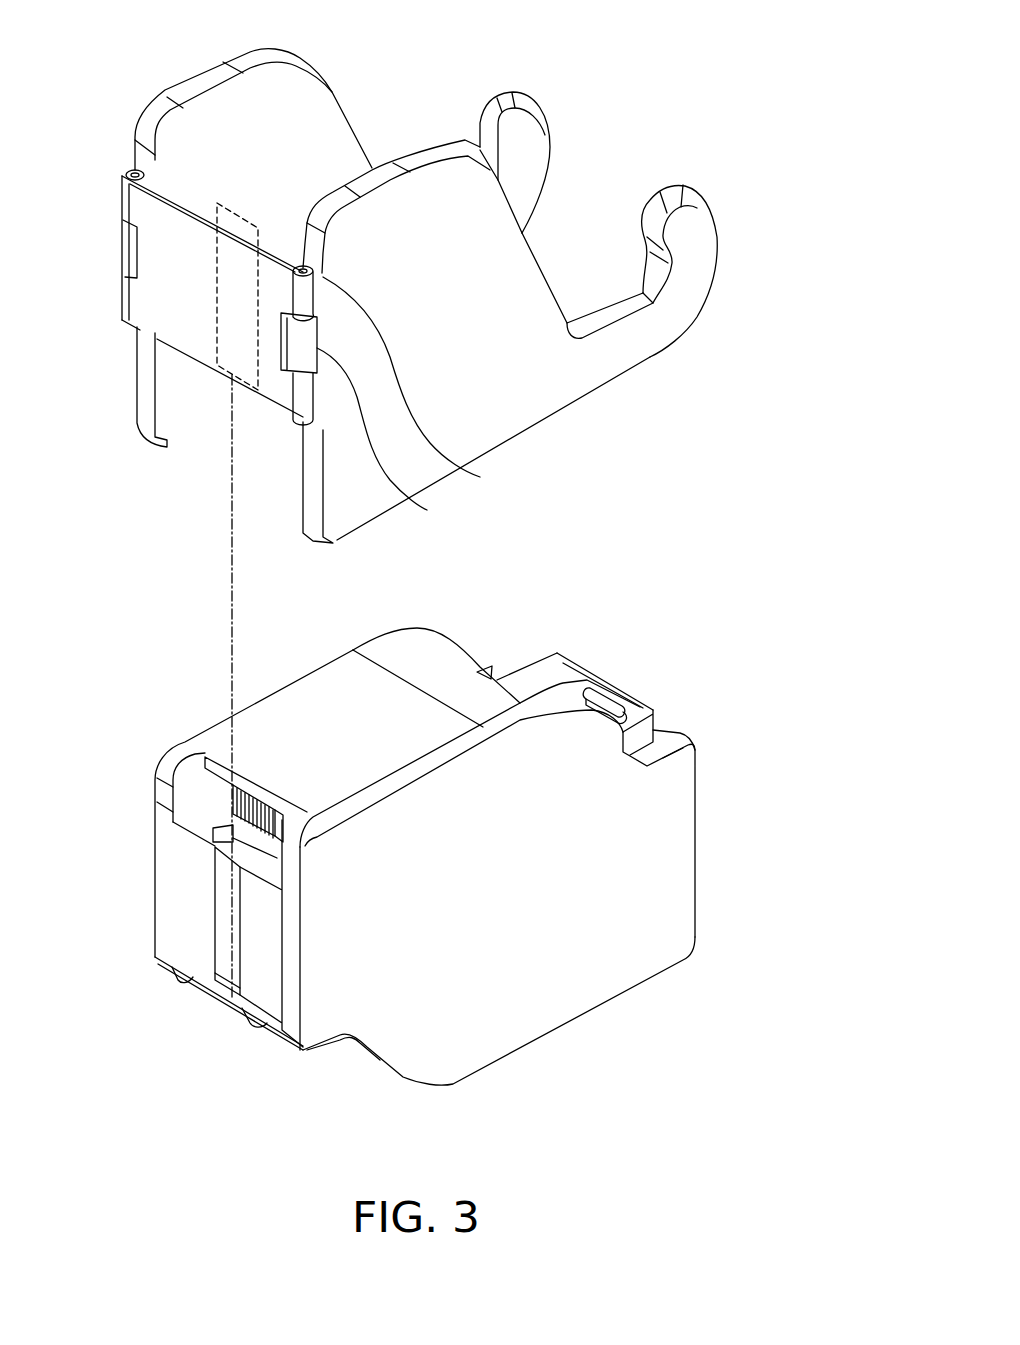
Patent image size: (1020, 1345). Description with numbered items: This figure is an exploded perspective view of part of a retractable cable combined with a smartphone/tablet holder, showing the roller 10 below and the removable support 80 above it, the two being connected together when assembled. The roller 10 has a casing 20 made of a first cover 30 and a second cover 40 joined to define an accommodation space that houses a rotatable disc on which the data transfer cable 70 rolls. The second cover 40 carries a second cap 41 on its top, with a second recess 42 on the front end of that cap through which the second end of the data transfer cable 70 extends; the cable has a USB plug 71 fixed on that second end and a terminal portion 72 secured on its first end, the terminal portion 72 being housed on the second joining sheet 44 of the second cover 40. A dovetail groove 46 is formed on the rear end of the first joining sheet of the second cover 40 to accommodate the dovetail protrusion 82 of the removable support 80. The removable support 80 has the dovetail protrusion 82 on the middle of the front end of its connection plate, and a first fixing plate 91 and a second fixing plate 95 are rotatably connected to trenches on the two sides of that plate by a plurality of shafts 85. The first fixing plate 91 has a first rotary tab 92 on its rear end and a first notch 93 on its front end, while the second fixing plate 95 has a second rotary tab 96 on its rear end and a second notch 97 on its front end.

The roller 10 is at (197, 713).
The casing 20 is at (648, 685).
The first cover 30 is at (543, 1013).
The second cover 40 is at (393, 642).
The second cap 41 is at (465, 703).
The second recess 42 is at (493, 667).
The second joining sheet 44 is at (207, 835).
The dovetail groove 46 is at (223, 917).
The data transfer cable 70 is at (560, 672).
The USB plug 71 is at (640, 707).
The terminal portion 72 is at (233, 817).
The removable support 80 is at (157, 460).
The dovetail protrusion 82 is at (215, 283).
The shafts 85 is at (133, 170).
The first fixing plate 91 is at (473, 437).
The first rotary tab 92 is at (427, 510).
The first notch 93 is at (620, 310).
The second fixing plate 95 is at (193, 87).
The second rotary tab 96 is at (125, 232).
The second notch 97 is at (447, 150).